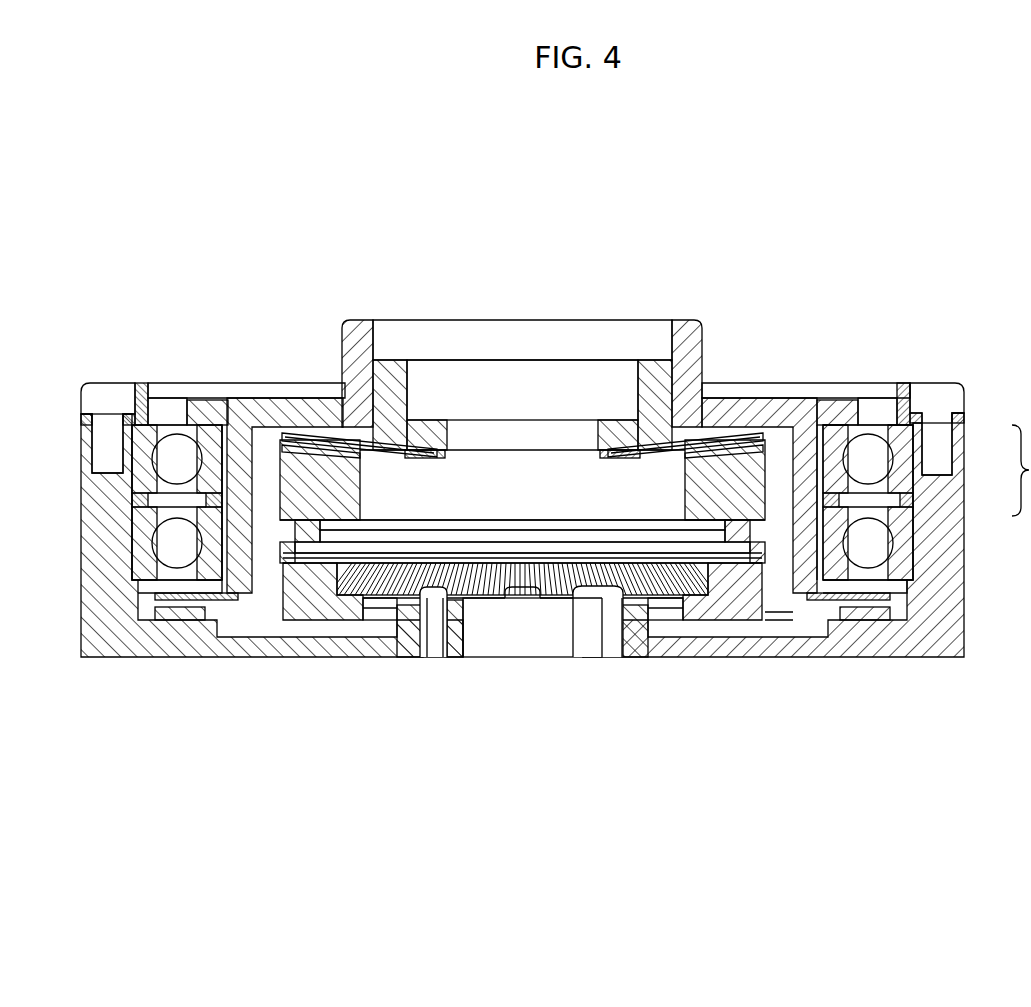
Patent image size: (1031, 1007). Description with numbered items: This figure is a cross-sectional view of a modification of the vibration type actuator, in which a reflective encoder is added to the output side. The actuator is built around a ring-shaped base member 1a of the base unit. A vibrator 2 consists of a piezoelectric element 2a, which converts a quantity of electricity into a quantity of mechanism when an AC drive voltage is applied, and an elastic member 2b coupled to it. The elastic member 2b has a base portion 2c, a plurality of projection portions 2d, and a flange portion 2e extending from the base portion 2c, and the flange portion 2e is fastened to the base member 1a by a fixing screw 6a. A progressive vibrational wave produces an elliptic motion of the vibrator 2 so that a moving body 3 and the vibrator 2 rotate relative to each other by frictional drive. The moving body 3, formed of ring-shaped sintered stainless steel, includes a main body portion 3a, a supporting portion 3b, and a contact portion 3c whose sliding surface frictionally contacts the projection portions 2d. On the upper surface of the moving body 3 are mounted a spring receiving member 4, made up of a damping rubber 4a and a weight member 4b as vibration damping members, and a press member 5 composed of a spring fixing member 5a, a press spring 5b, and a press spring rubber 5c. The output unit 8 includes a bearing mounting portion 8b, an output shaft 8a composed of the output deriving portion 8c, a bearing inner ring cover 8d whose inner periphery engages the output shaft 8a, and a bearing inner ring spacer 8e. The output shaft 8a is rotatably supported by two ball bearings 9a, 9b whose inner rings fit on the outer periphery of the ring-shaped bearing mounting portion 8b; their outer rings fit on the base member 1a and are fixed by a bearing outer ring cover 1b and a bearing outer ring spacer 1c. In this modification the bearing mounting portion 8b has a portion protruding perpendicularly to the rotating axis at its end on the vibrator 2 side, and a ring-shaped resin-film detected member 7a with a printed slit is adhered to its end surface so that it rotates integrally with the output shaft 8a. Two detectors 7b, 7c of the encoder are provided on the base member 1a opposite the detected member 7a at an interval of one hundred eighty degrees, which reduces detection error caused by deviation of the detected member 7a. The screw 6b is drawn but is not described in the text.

The base member 1a is at (945, 485).
The bearing outer ring cover 1b is at (915, 395).
The bearing outer ring spacer 1c is at (915, 498).
The vibrator 2 is at (560, 681).
The piezoelectric element 2a is at (768, 612).
The elastic member 2b is at (545, 671).
The base portion 2c is at (676, 597).
The projection portions 2d is at (630, 600).
The flange portion 2e is at (637, 612).
The moving body 3 is at (507, 637).
The main body portion 3a is at (284, 552).
The supporting portion 3b is at (315, 580).
The contact portion 3c is at (305, 531).
The spring receiving member 4 is at (492, 405).
The damping rubber 4a is at (253, 433).
The weight member 4b is at (313, 473).
The press member 5 is at (522, 331).
The spring fixing member 5a is at (393, 380).
The press spring 5b is at (637, 366).
The press spring rubber 5c is at (662, 440).
The fixing screw 6a is at (432, 625).
The upper fixing screw 6b is at (107, 396).
The detected member 7a is at (812, 623).
The detector 7b is at (862, 620).
The detector 7c is at (173, 620).
The output unit 8 is at (581, 388).
The output shaft 8a is at (521, 413).
The bearing mounting portion 8b is at (800, 460).
The output deriving portion 8c is at (690, 324).
The bearing inner ring cover 8d is at (840, 470).
The bearing inner ring spacer 8e is at (856, 555).
The ball bearing 9a is at (912, 572).
The ball bearing 9b is at (905, 528).